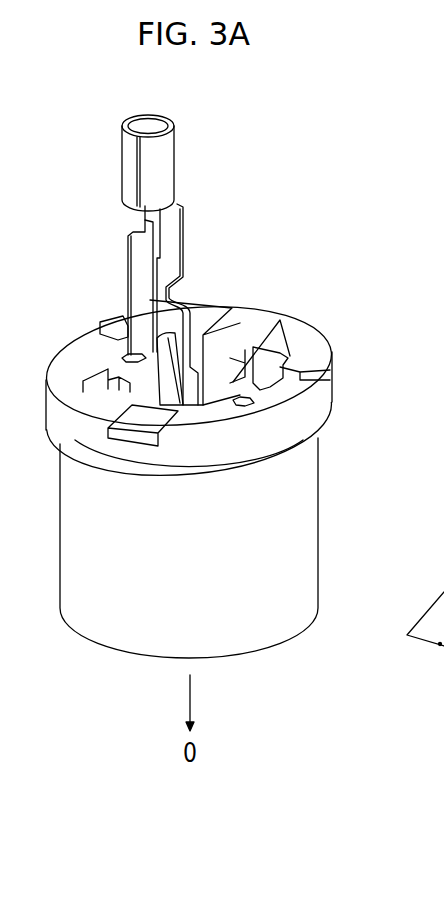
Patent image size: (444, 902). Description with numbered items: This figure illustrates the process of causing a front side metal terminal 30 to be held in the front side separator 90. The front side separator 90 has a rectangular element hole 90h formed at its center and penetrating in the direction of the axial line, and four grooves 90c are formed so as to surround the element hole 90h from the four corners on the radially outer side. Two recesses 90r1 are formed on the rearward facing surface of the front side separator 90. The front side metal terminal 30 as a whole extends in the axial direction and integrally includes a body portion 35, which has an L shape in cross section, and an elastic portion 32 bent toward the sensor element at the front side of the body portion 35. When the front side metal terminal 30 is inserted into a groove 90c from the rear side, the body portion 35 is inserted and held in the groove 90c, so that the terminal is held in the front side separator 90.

The front side metal terminal 30 is at (97, 192).
The elastic portion 32 is at (112, 338).
The body portion 35 is at (143, 287).
The front side separator 90 is at (308, 537).
The groove 90c is at (125, 362).
The element hole 90h is at (223, 372).
The recess 90r1 is at (290, 393).